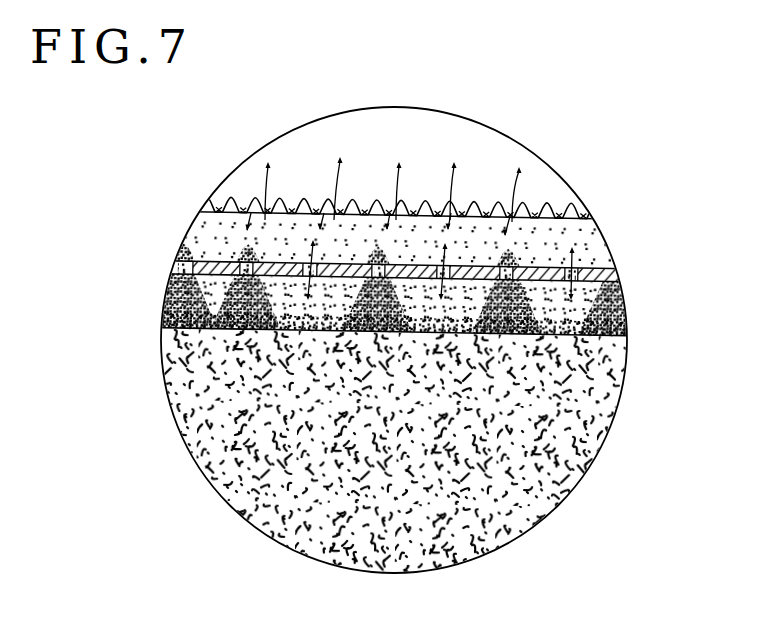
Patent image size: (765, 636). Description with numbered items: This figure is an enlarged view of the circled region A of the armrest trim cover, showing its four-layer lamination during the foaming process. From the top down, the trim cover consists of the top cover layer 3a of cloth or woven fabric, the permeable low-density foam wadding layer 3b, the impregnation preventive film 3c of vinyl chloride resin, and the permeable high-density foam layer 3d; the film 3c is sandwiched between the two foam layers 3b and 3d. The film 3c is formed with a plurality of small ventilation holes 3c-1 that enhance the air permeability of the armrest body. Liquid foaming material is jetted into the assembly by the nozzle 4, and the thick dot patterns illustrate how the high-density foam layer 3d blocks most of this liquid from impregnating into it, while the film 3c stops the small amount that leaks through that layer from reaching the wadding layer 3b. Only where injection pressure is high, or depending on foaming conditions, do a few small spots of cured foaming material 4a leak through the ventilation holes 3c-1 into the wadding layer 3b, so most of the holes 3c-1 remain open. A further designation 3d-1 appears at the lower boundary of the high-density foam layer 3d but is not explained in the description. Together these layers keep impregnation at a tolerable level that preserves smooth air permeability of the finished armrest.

The circle A is at (553, 168).
The top cover layer 3a is at (589, 214).
The permeable low-density foam layer 3b is at (596, 241).
The impregnation preventive film 3c is at (618, 273).
The ventilation holes 3c-1 is at (250, 258).
The permeable high-density foam layer 3d is at (613, 302).
The bottom surface of lower layer 3d-1 is at (197, 328).
The nozzle 4 is at (550, 462).
The small spots of cured foaming material 4a is at (376, 248).